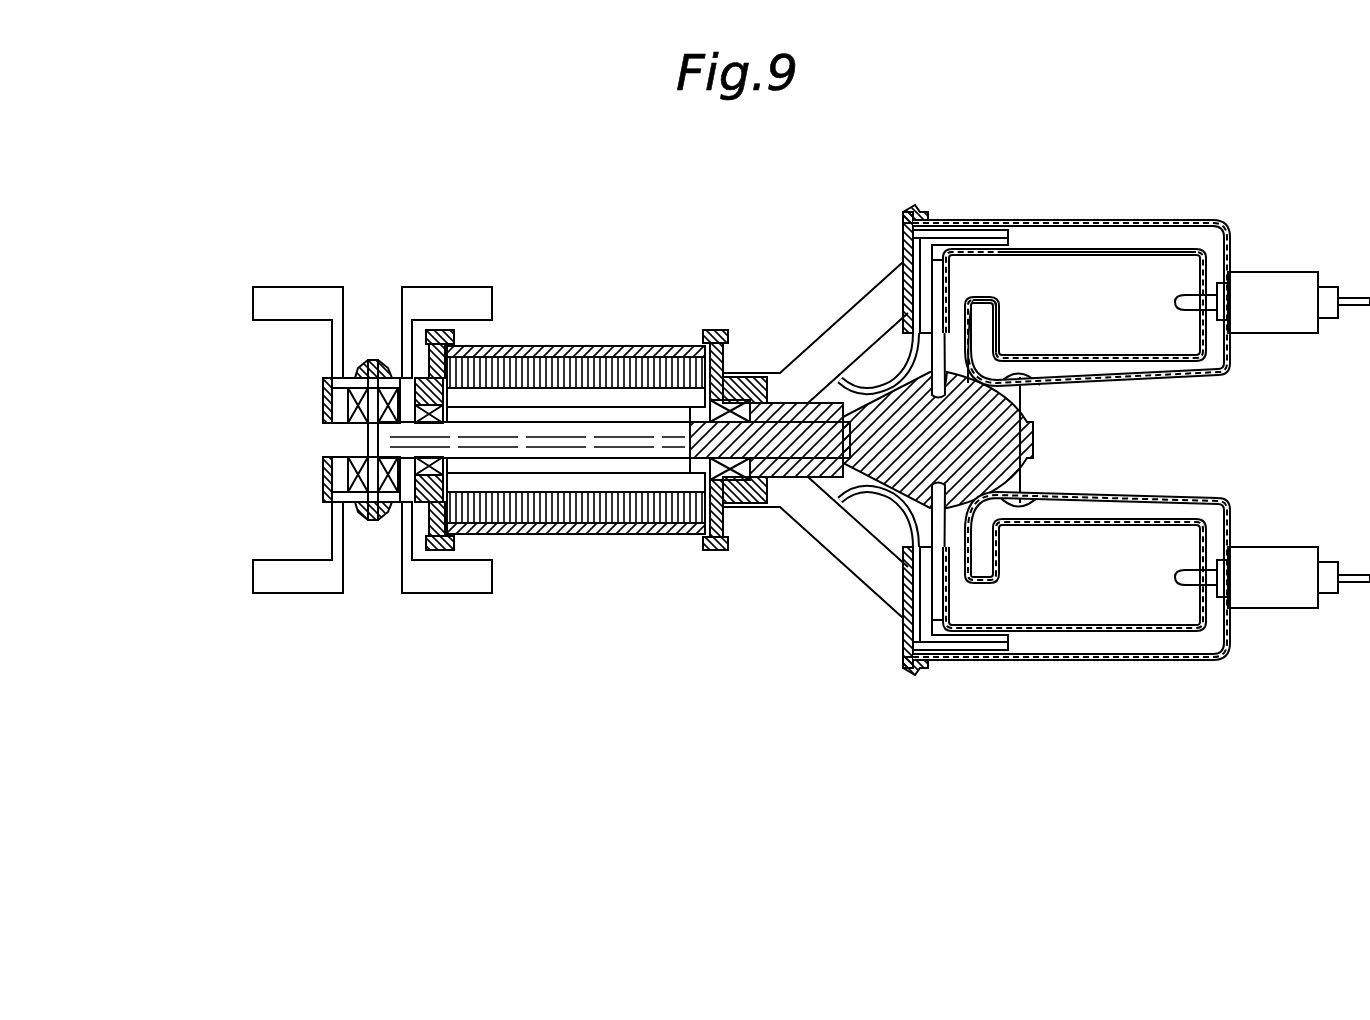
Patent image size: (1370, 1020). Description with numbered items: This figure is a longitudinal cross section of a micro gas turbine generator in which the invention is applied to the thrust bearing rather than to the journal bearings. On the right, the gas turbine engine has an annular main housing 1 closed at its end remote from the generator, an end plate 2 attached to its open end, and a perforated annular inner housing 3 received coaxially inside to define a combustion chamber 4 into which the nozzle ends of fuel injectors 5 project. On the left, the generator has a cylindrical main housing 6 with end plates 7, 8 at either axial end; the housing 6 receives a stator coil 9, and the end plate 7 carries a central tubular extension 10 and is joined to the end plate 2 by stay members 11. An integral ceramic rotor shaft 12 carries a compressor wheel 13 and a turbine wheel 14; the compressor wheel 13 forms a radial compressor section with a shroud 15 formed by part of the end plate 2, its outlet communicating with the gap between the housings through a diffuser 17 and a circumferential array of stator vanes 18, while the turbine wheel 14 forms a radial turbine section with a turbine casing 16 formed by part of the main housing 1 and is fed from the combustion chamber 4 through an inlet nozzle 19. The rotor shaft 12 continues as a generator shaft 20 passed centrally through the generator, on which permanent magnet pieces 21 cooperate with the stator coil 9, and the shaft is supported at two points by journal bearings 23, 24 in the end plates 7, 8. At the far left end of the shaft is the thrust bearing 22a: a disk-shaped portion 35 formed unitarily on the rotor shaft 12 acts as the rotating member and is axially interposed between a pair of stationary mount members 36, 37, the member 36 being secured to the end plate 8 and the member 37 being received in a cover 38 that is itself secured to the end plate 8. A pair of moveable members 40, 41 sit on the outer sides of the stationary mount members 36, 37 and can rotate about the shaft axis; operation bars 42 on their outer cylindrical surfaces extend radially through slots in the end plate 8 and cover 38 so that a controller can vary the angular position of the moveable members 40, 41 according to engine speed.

The main housing 1 is at (1212, 220).
The end plate 2 is at (912, 208).
The inner housing 3 is at (1137, 250).
The combustion chamber 4 is at (1083, 321).
The fuel injector 5 is at (1288, 275).
The main housing 6 is at (580, 530).
The end plate 7 is at (722, 550).
The end plate 8 is at (413, 500).
The stator coil 9 is at (640, 523).
The tubular extension 10 is at (773, 458).
The stay member 11 is at (827, 522).
The rotor shaft 12 is at (858, 473).
The compressor wheel 13 is at (873, 490).
The turbine wheel 14 is at (1003, 488).
The shroud 15 is at (877, 377).
The turbine casing 16 is at (1007, 372).
The diffuser 17 is at (900, 617).
The stator vanes 18 is at (985, 640).
The inlet nozzle 19 is at (955, 300).
The generator shaft 20 is at (525, 453).
The permanent magnet pieces 21 is at (562, 407).
The thrust bearing 22a is at (371, 263).
The journal bearing 23 is at (745, 358).
The journal bearing 24 is at (420, 373).
The disk-shaped portion 35 is at (372, 438).
The stationary mount member 36 is at (387, 378).
The stationary mount member 37 is at (350, 378).
The cover 38 is at (333, 482).
The moveable member 40 is at (385, 500).
The moveable member 41 is at (352, 500).
The operation bars 42 is at (287, 295).